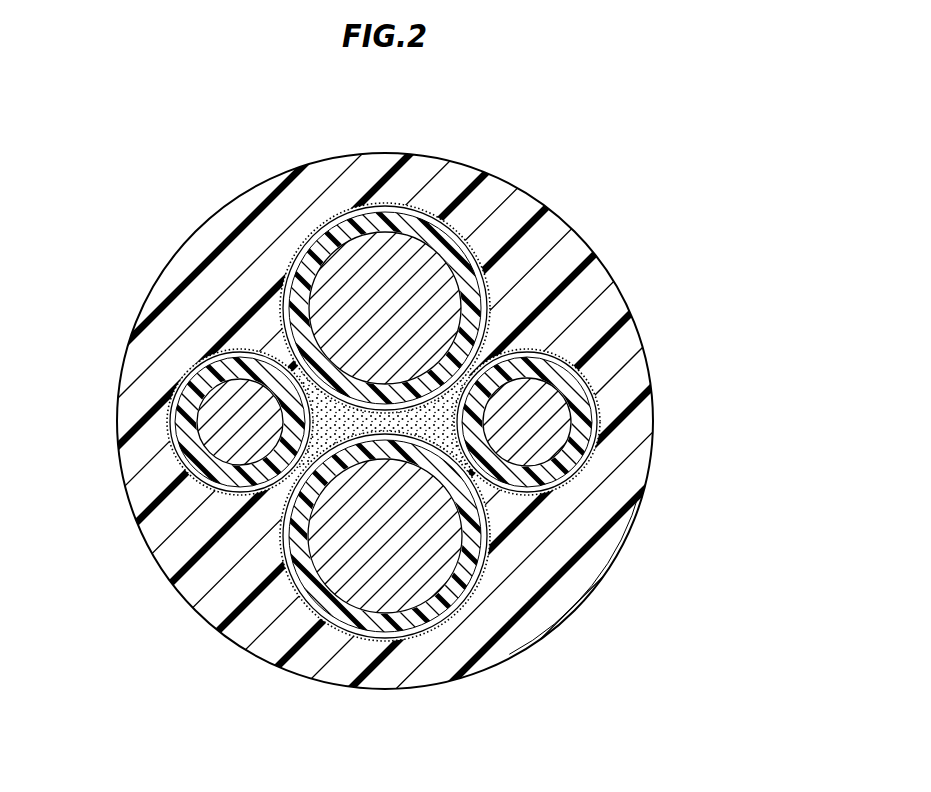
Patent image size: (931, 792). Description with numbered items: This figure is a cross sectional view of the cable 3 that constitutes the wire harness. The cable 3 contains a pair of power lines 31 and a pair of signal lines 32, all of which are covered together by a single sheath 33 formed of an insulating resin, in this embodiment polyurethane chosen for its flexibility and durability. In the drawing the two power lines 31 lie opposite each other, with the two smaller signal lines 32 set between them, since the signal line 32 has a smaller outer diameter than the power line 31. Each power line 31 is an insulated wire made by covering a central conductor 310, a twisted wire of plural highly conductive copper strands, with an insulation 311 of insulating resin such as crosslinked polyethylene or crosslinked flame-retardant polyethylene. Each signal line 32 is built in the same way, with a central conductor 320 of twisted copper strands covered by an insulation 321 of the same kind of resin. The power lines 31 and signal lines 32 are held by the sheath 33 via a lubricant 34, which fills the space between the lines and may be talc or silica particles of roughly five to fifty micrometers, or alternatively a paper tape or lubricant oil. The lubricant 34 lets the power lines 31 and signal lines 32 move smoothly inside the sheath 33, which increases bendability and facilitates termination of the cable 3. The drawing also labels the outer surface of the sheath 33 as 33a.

The cable 3 is at (160, 153).
The power line 31 is at (604, 135).
The central conductor 310 is at (430, 262).
The insulation 311 is at (463, 263).
The signal line 32 is at (713, 303).
The central conductor 320 is at (543, 397).
The insulation 321 is at (592, 402).
The sheath 33 is at (592, 565).
The outer surface of sheath 33a is at (535, 643).
The lubricant 34 is at (467, 440).